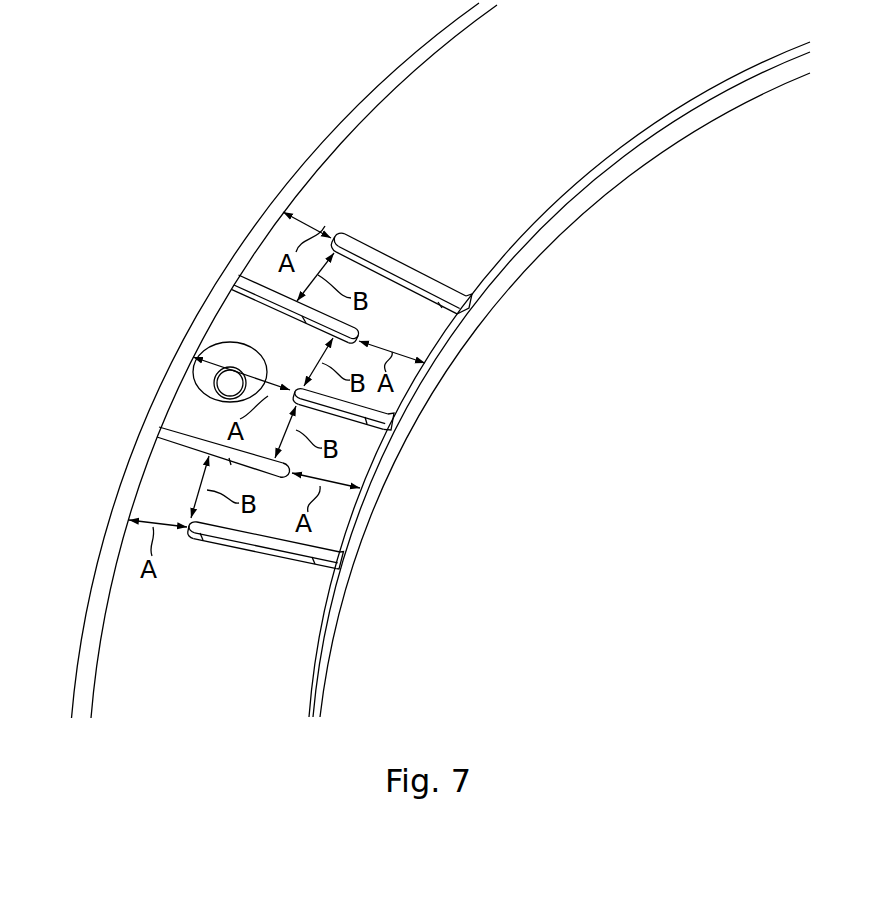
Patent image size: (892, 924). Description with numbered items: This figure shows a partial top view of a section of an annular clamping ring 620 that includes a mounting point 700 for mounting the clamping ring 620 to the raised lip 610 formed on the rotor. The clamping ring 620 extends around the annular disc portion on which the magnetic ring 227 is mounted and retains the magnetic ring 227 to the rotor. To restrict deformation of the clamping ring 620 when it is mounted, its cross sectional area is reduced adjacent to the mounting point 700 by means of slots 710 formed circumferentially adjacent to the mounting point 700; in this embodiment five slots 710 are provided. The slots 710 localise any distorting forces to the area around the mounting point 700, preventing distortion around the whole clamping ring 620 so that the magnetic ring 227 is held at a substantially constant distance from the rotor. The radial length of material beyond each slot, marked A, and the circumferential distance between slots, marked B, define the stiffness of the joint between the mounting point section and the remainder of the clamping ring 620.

The raised lip 610 is at (232, 268).
The clamping ring 620 is at (533, 197).
The magnetic ring 227 is at (457, 314).
The mounting point 700 is at (233, 386).
The slots 710 is at (322, 561).